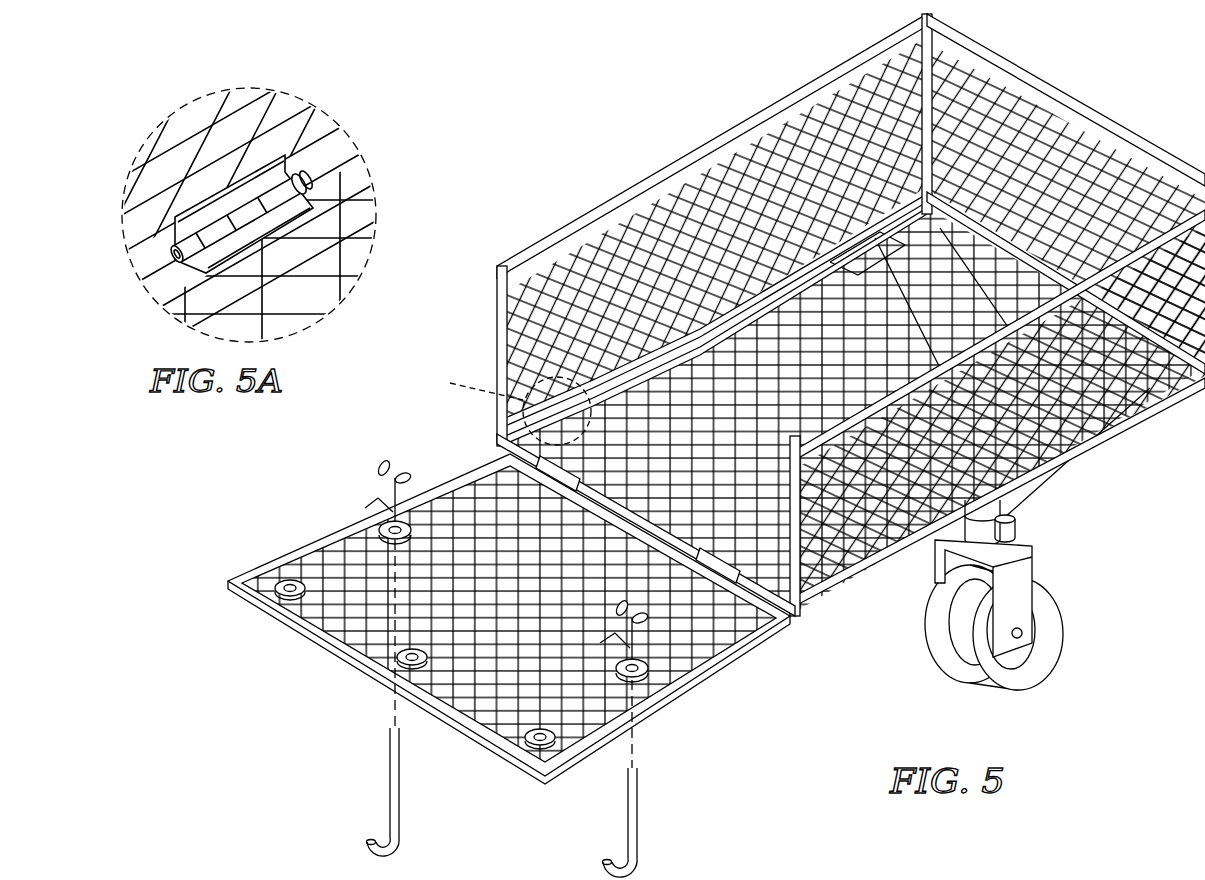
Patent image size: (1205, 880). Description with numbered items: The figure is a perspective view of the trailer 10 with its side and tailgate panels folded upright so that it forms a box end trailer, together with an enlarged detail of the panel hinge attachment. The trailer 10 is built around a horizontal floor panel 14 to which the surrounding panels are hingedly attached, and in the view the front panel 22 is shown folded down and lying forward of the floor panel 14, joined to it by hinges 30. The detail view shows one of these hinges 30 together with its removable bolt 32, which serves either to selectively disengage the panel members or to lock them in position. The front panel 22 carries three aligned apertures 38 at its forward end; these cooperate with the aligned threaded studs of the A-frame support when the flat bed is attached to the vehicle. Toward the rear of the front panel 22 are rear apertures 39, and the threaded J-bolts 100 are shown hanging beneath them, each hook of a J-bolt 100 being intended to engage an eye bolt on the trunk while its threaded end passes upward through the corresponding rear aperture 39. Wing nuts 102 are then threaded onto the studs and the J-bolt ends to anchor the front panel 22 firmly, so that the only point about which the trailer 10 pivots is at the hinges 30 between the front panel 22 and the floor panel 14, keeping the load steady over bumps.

In FIG. 5, the trailer 10 is at (697, 445).
In FIG. 5, the horizontal floor panel 14 is at (795, 606).
In FIG. 5, the front panel 22 is at (325, 578).
In FIG. 5A, the hinge 30 is at (304, 184).
In FIG. 5A, the removable bolt 32 is at (278, 176).
In FIG. 5, the aligned aperture 38 is at (275, 590).
In FIG. 5, the rear aperture 39 is at (382, 520).
In FIG. 5, the threaded J-bolt 100 is at (405, 848).
In FIG. 5, the wing nut 102 is at (393, 460).